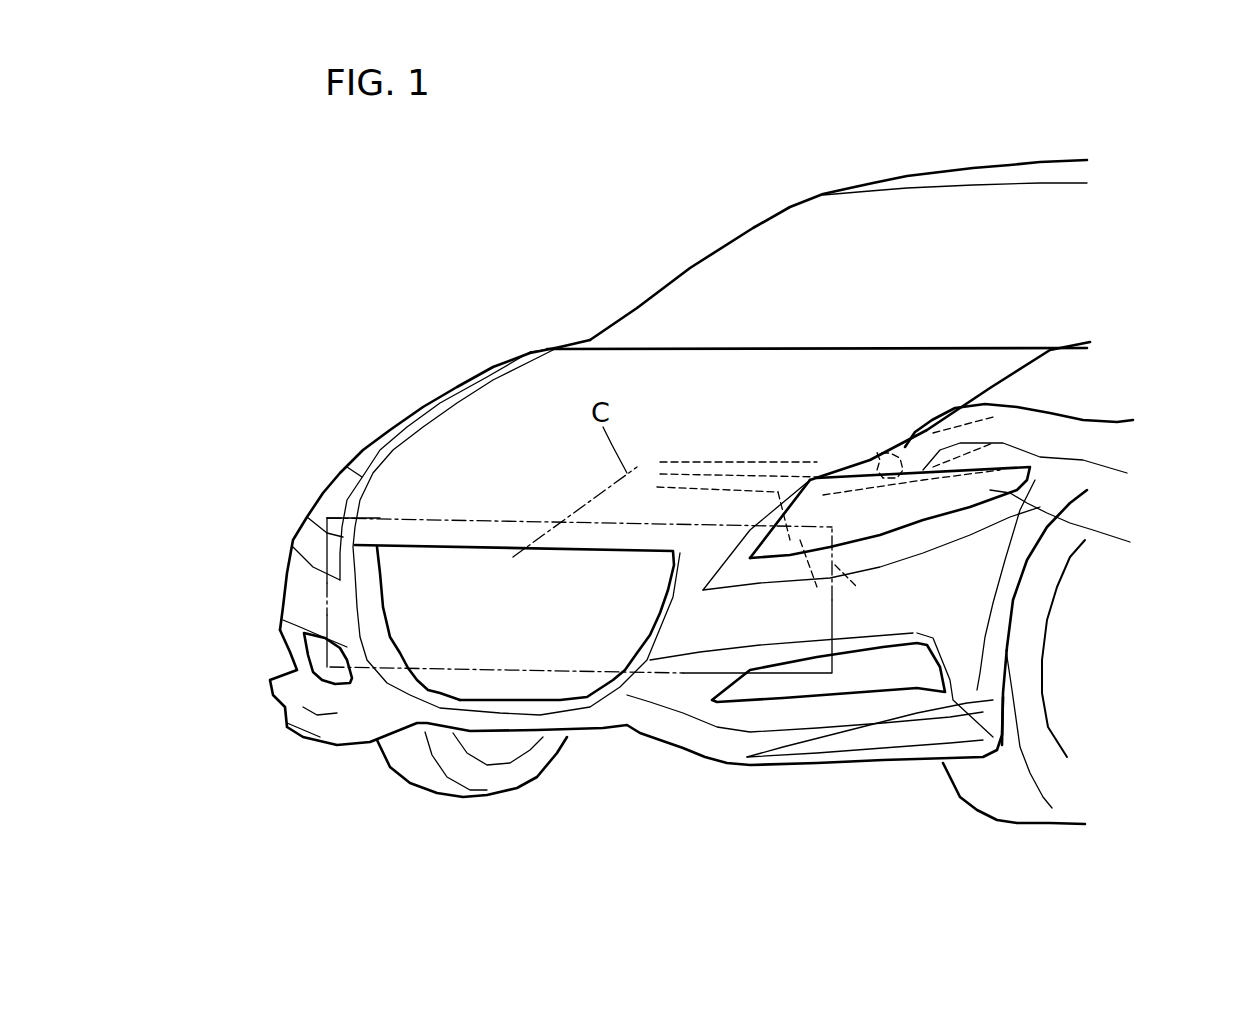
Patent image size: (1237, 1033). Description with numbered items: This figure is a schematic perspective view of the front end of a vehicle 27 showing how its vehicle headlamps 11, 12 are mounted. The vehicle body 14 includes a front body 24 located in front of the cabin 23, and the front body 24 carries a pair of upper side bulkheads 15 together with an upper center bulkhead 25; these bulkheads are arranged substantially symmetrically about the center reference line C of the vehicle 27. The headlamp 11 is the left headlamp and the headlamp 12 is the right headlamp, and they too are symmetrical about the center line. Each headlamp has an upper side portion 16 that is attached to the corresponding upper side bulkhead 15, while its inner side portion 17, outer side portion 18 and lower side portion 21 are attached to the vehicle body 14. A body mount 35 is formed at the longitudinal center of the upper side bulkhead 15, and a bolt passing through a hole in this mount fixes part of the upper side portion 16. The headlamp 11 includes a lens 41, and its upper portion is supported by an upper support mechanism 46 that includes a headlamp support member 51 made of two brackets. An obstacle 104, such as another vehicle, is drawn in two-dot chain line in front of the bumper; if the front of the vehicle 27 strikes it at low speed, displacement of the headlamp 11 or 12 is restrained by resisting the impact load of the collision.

The vehicle headlamp 11 is at (896, 377).
The vehicle headlamp 12 is at (636, 538).
The vehicle body 14 is at (838, 211).
The upper side bulkhead 15 is at (1046, 431).
The upper side portion 16 is at (1042, 468).
The inner side portion 17 is at (757, 524).
The outer side portion 18 is at (1076, 617).
The lower side portion 21 is at (928, 644).
The cabin 23 is at (1048, 464).
The front body 24 is at (480, 495).
The upper center bulkhead 25 is at (528, 517).
The vehicle 27 is at (817, 240).
The body mount 35 is at (890, 460).
The lens 41 is at (682, 570).
The upper support mechanism 46 is at (881, 415).
The headlamp support member 51 is at (871, 471).
The obstacle 104 is at (579, 677).